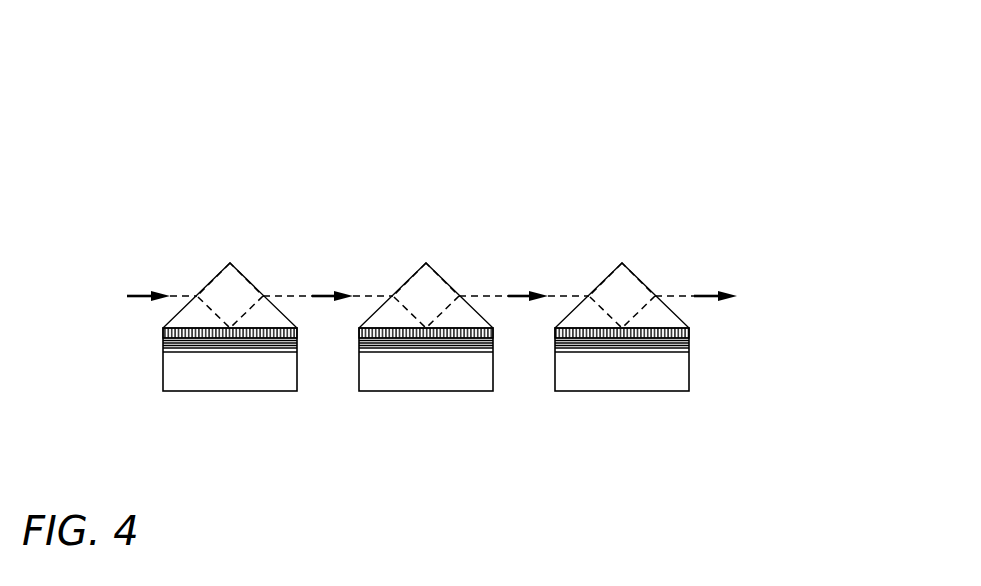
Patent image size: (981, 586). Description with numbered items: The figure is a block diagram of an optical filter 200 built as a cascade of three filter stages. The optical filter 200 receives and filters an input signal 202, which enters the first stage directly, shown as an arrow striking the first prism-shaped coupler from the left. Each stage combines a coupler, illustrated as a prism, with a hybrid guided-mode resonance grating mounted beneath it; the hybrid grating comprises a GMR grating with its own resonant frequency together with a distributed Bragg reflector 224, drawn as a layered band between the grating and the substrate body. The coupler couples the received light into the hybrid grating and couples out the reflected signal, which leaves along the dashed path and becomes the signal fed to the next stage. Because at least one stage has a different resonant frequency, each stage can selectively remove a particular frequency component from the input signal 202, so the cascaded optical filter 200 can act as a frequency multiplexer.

The optical filter 200 is at (640, 86).
The input signal 202 is at (143, 293).
The distributed Bragg reflector (DBR) 224 is at (163, 345).